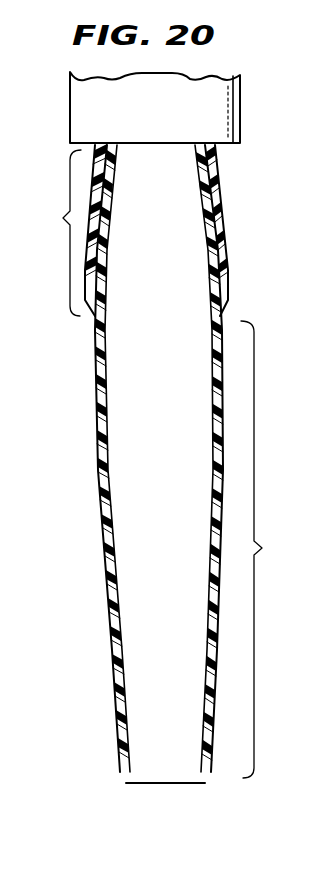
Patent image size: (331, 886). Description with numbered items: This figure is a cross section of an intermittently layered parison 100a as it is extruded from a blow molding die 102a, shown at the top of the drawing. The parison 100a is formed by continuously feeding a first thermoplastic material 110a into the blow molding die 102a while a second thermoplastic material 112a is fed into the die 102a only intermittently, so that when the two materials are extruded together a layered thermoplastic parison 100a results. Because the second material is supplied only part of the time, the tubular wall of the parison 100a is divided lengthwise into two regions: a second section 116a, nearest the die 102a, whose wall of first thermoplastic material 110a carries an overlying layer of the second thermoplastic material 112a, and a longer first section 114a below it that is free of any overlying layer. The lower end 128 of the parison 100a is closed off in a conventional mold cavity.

The parison 100a is at (165, 491).
The blow molding die 102a is at (218, 118).
The first thermoplastic material 110a is at (96, 405).
The second thermoplastic material 112a is at (227, 253).
The first section 114a is at (273, 549).
The second section 116a is at (54, 233).
The end 128 is at (162, 793).